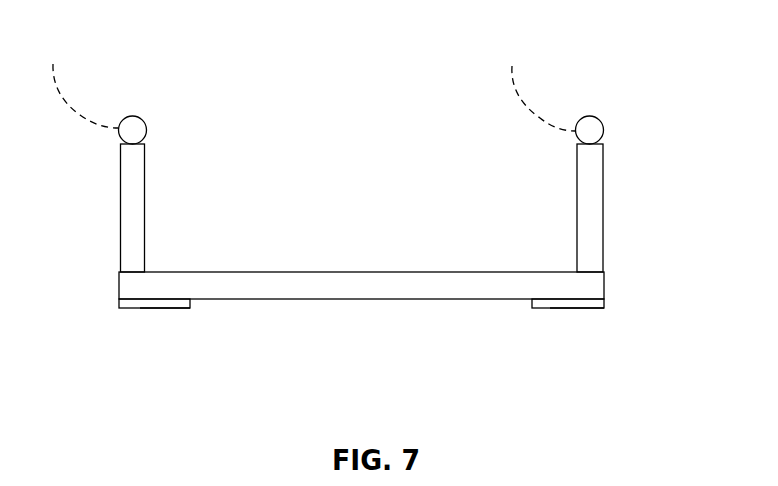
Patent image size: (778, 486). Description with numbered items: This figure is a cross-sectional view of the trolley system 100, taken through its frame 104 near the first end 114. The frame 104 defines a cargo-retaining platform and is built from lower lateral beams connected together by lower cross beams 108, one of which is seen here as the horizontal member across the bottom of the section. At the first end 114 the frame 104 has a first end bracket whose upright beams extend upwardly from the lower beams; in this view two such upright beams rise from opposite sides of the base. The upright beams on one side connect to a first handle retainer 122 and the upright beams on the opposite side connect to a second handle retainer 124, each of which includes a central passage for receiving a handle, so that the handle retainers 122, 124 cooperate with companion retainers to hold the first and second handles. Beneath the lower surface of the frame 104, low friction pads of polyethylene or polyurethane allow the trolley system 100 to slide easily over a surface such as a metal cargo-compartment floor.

The trolley system 100 is at (96, 40).
The frame 104 is at (620, 204).
The lower cross beams 108 is at (292, 272).
The first end 114 is at (621, 265).
The first handle retainer 122 is at (147, 127).
The second handle retainer 124 is at (604, 130).